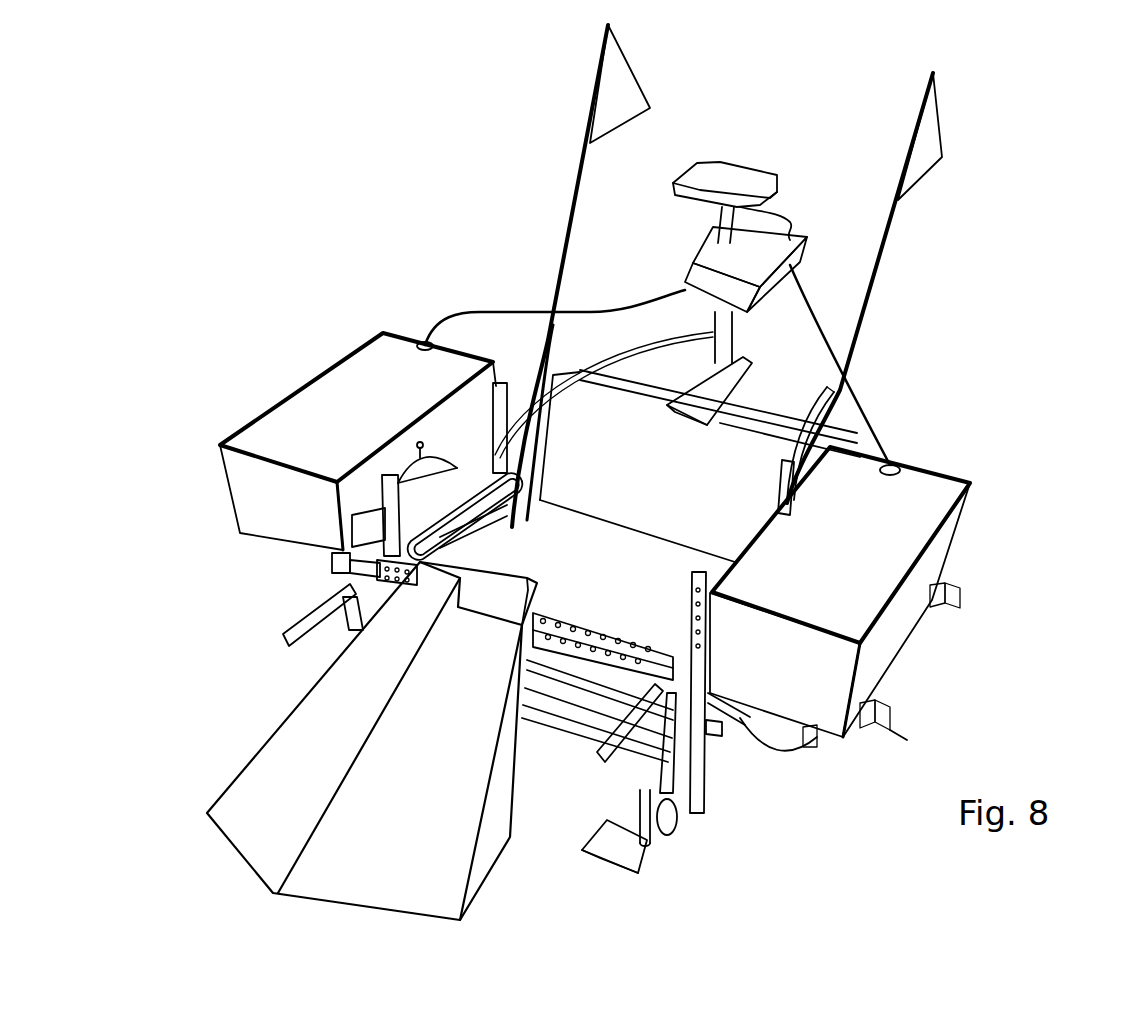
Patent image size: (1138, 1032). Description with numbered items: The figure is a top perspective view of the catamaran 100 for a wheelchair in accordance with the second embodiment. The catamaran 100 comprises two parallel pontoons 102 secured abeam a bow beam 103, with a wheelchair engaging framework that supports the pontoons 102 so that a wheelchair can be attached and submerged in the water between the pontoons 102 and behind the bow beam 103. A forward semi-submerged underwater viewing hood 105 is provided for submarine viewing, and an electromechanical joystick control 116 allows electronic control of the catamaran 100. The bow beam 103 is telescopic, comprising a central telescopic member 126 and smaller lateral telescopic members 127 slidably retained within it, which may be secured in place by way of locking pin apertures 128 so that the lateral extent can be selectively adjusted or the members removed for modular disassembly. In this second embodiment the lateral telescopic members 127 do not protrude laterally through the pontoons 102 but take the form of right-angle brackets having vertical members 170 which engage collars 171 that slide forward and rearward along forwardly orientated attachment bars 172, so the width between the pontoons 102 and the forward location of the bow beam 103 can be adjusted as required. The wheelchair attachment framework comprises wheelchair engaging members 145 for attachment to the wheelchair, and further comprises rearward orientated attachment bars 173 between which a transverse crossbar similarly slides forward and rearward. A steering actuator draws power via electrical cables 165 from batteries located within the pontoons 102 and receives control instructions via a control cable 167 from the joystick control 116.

The catamaran 100 is at (666, 472).
The pontoon 102 is at (607, 507).
The bow beam 103 is at (636, 716).
The underwater viewing hood 105 is at (670, 511).
The electromechanical joystick control 116 is at (336, 416).
The central telescopic member 126 is at (498, 543).
The lateral telescopic member 127 is at (531, 680).
The locking pin aperture 128 is at (615, 582).
The wheelchair engaging member 145 is at (658, 831).
The electrical cable 165 is at (688, 348).
The control cable 167 is at (604, 384).
The vertical member 170 is at (552, 602).
The collar 171 is at (430, 690).
The forwardly orientated attachment bar 172 is at (411, 702).
The rearward orientated attachment bar 173 is at (700, 379).